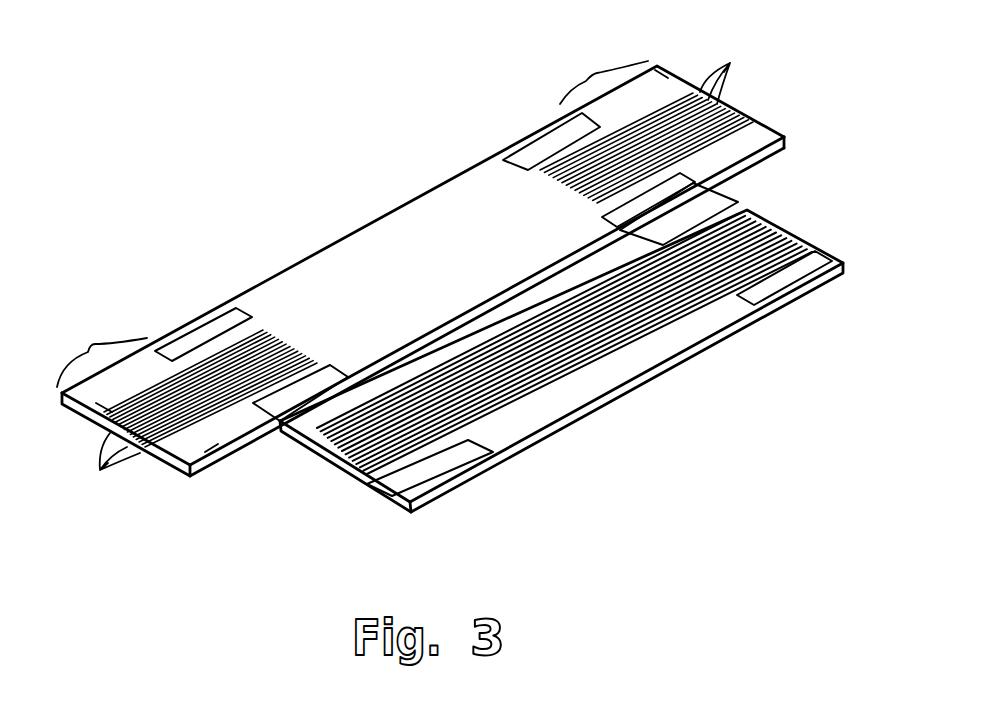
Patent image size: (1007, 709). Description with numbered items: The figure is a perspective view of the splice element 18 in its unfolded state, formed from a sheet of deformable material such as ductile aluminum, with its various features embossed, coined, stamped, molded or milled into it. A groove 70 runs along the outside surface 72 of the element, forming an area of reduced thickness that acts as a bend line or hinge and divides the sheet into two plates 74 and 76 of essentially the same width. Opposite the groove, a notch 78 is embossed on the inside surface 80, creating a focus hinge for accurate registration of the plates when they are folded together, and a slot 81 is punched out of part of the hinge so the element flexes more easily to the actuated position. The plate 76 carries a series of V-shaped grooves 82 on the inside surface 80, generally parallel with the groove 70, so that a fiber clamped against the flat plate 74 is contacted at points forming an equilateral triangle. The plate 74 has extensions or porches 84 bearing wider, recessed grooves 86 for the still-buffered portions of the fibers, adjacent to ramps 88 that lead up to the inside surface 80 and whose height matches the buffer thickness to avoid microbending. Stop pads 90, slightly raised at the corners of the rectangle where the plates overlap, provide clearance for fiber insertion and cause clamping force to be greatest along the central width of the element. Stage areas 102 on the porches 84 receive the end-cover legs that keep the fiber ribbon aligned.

The splice element 18 is at (373, 148).
The groove 70 is at (283, 427).
The outside surface 72 is at (160, 466).
The plate 74 is at (452, 178).
The plate 76 is at (656, 388).
The notch 78 is at (342, 390).
The inside surface 80 is at (375, 257).
The slot 81 is at (507, 297).
The V-shaped grooves 82 is at (770, 229).
The porches 84 is at (352, 214).
The grooves 86 is at (413, 270).
The ramps 88 is at (277, 345).
The stop pads 90 is at (205, 333).
The stage areas 102 is at (660, 80).